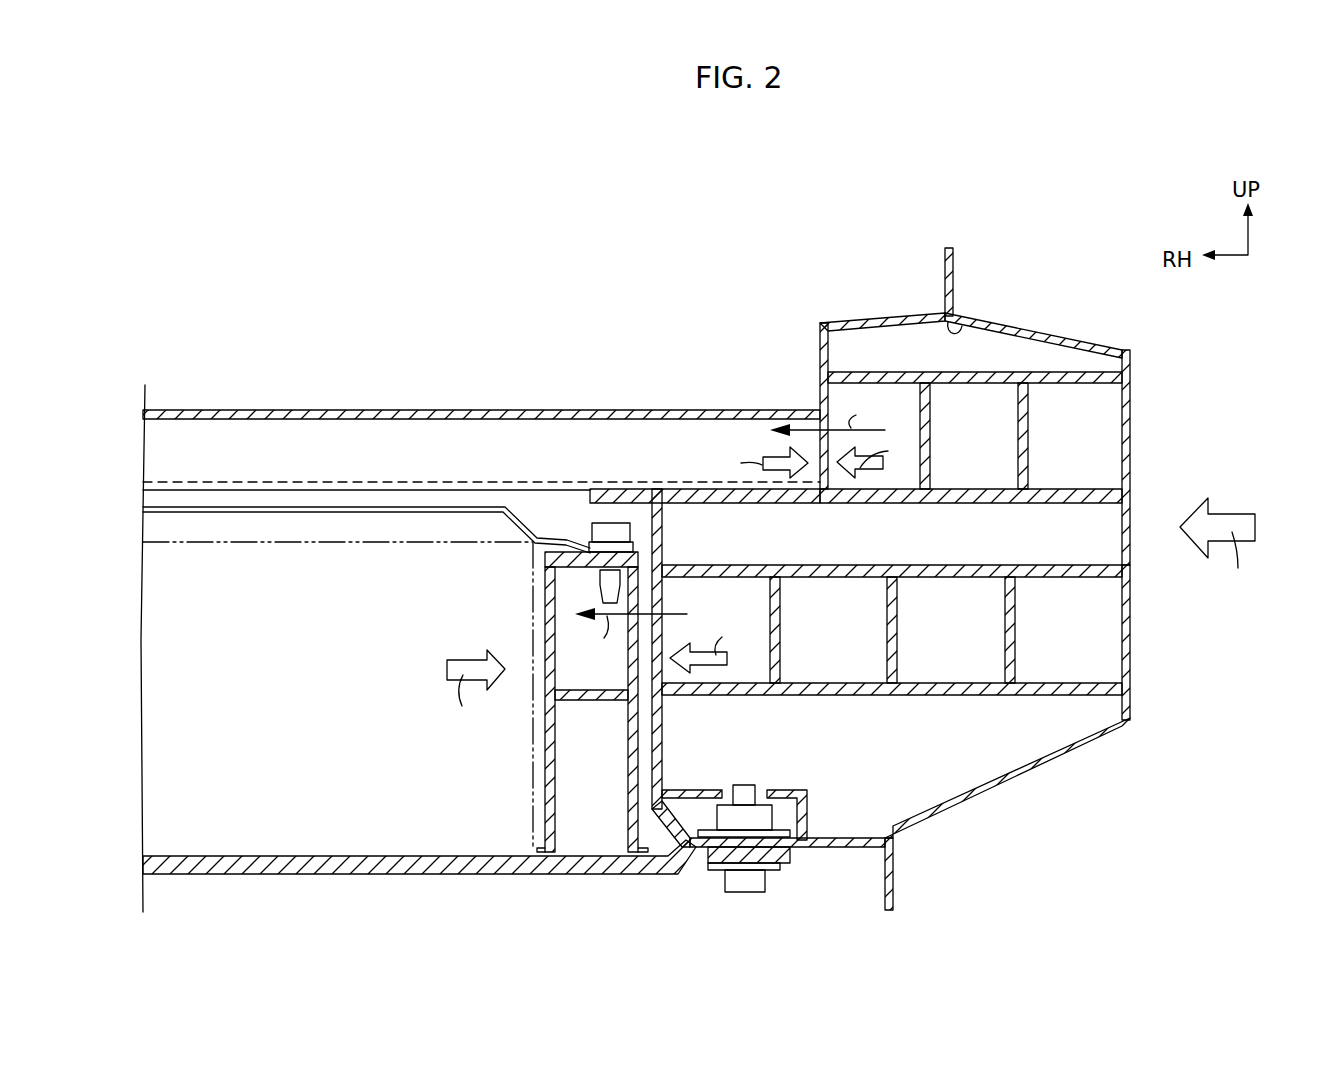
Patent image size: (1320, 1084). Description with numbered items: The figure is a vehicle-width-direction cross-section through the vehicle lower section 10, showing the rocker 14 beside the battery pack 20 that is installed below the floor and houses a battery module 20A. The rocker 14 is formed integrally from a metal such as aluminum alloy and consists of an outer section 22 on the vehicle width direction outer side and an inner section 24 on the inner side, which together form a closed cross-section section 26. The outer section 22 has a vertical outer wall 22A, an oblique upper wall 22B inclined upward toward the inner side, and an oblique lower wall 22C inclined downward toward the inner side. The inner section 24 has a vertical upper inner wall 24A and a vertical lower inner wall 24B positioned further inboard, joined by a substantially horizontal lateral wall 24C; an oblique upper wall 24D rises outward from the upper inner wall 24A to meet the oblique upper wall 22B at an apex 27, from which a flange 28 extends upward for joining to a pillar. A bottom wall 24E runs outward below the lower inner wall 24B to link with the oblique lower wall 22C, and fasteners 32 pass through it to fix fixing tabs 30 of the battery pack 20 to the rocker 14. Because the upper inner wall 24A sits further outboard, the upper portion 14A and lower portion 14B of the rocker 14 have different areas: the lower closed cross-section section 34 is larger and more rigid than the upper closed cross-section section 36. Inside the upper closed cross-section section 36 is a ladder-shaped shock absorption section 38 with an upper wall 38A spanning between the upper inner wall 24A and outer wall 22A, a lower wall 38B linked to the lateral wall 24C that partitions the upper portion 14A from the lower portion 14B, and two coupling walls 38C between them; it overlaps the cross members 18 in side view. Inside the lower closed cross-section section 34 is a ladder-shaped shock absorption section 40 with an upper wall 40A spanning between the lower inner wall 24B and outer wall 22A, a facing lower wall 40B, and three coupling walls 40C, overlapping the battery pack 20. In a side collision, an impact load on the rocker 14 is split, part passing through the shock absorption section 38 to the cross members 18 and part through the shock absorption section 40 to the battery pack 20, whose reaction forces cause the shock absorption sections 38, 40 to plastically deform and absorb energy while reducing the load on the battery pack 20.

The vehicle lower section 10 is at (1200, 331).
The rocker 14 is at (1148, 469).
The upper portion of the rocker 14A is at (1130, 418).
The lower portion of the rocker 14B is at (1130, 677).
The cross members 18 is at (446, 410).
The battery pack 20 is at (426, 878).
The battery module 20A is at (299, 828).
The outer section 22 is at (1143, 568).
The outer wall 22A is at (1130, 625).
The oblique upper wall of the outer section 22B is at (1040, 338).
The oblique lower wall 22C is at (1024, 778).
The inner section 24 is at (812, 395).
The upper inner wall 24A is at (820, 350).
The lower inner wall 24B is at (641, 527).
The lateral wall 24C is at (690, 488).
The oblique upper wall of the inner section 24D is at (876, 324).
The bottom wall 24E is at (833, 849).
The closed cross-section section 26 is at (1007, 467).
The apex 27 is at (958, 322).
The flange 28 is at (955, 262).
The fixing tabs 30 is at (718, 854).
The fasteners 32 is at (748, 880).
The lower closed cross-section section 34 is at (876, 738).
The upper closed cross-section section 36 is at (963, 467).
The shock absorption section (second shock absorption section) 38 is at (962, 512).
The upper wall of the second shock absorption section 38A is at (888, 383).
The lower wall of the second shock absorption section 38B is at (877, 503).
The coupling walls of the second shock absorption section 38C is at (926, 405).
The shock absorption section (first shock absorption section) 40 is at (780, 704).
The upper wall of the first shock absorption section 40A is at (718, 569).
The lower wall of the first shock absorption section 40B is at (707, 697).
The coupling walls of the first shock absorption section 40C is at (779, 630).